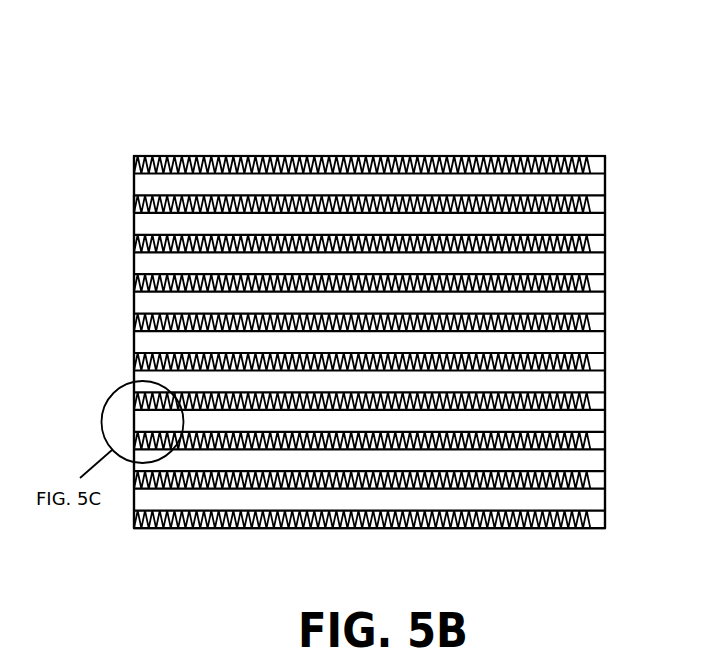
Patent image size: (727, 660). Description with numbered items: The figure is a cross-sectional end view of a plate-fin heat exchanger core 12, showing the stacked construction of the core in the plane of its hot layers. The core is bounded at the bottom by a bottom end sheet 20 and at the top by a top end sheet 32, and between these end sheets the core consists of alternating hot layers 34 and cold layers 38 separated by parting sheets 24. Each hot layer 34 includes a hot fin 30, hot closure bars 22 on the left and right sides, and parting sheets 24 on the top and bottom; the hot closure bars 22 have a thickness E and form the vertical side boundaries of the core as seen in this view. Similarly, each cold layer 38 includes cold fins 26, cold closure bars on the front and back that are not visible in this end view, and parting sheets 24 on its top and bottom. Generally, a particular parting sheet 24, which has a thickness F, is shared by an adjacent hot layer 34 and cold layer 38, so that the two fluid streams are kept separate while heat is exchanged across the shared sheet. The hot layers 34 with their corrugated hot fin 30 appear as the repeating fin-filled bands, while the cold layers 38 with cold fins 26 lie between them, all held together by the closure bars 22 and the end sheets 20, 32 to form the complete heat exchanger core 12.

The heat exchanger core 12 is at (394, 86).
The bottom end sheet 20 is at (253, 528).
The hot closure bars 22 is at (605, 205).
The parting sheets 24 is at (580, 323).
The cold fins 26 is at (143, 224).
The hot fin 30 is at (142, 206).
The top end sheet 32 is at (460, 155).
The hot layers 34 is at (222, 195).
The cold layers 38 is at (294, 227).